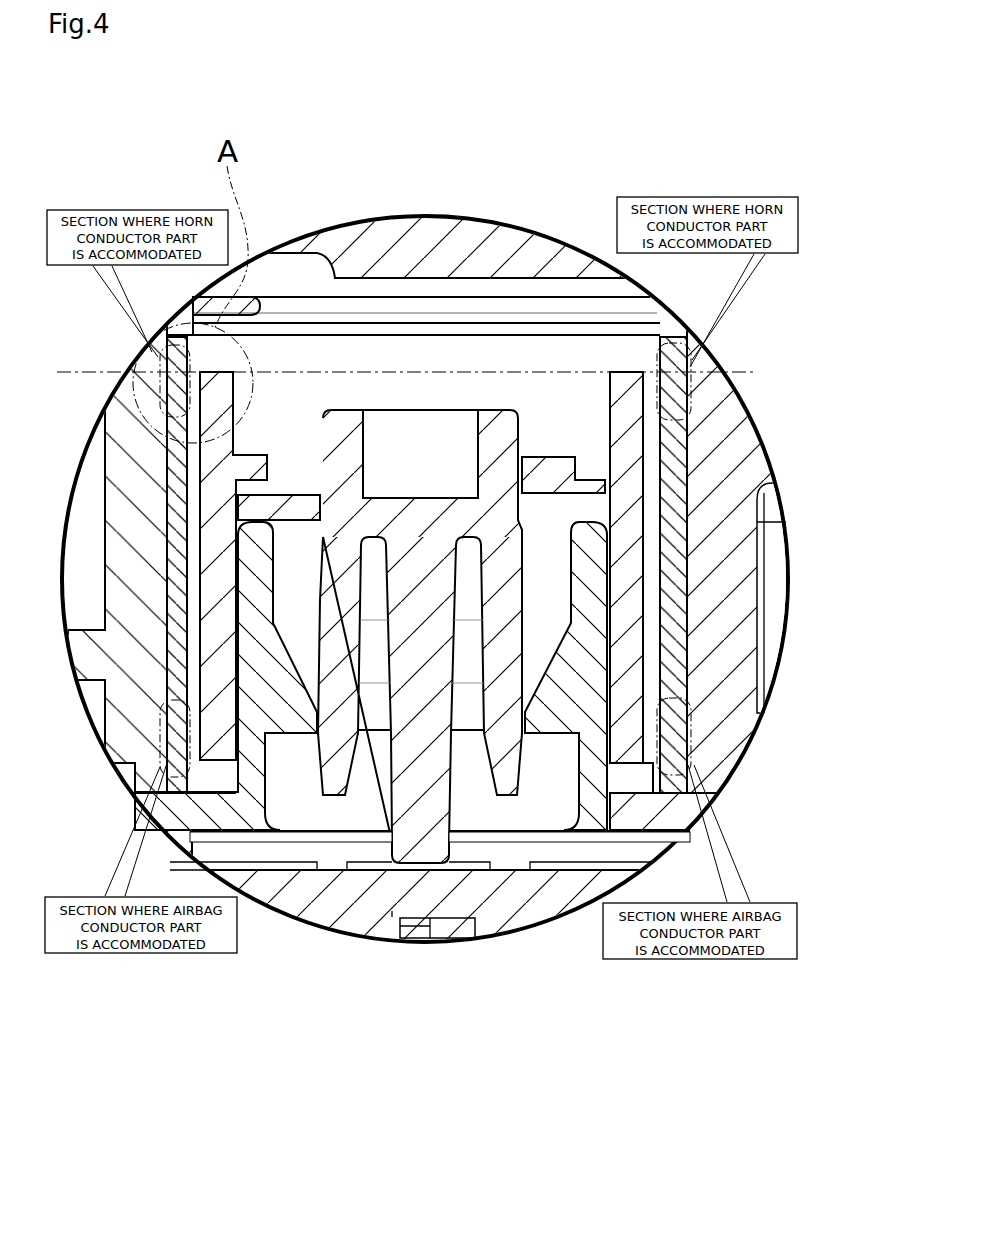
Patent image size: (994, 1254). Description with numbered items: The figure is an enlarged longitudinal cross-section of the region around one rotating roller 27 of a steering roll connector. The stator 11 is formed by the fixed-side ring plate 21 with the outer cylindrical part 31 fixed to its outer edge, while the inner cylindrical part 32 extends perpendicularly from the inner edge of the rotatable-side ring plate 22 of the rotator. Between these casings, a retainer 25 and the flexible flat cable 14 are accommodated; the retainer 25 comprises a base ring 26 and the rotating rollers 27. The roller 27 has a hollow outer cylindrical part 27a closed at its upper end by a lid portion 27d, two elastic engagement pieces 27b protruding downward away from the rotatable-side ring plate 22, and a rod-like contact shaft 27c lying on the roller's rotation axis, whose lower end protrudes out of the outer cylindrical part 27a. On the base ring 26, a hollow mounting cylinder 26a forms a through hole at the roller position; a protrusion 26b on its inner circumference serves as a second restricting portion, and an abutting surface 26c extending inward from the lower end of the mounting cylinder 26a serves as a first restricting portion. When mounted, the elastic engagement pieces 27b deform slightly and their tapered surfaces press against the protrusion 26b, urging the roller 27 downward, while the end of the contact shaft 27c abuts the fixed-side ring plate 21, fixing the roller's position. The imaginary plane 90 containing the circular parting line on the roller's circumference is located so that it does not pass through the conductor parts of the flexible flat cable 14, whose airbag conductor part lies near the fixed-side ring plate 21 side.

The stator 11 is at (157, 1003).
The flexible flat cable 14 is at (682, 658).
The fixed-side ring plate 21 is at (412, 940).
The rotatable-side ring plate 22 is at (555, 357).
The retainer 25 is at (582, 335).
The base ring 26 is at (412, 585).
The mounting cylinder 26a is at (262, 565).
The protrusion 26b is at (287, 720).
The abutting surface 26c is at (600, 760).
The rotating roller 27 is at (429, 557).
The outer cylindrical part 27a is at (628, 380).
The elastic engagement piece 27b is at (352, 714).
The contact shaft 27c is at (410, 850).
The lid portion 27d is at (542, 463).
The outer cylindrical part 31 is at (118, 500).
The inner cylindrical part 32 is at (740, 448).
The imaginary plane 90 is at (73, 370).